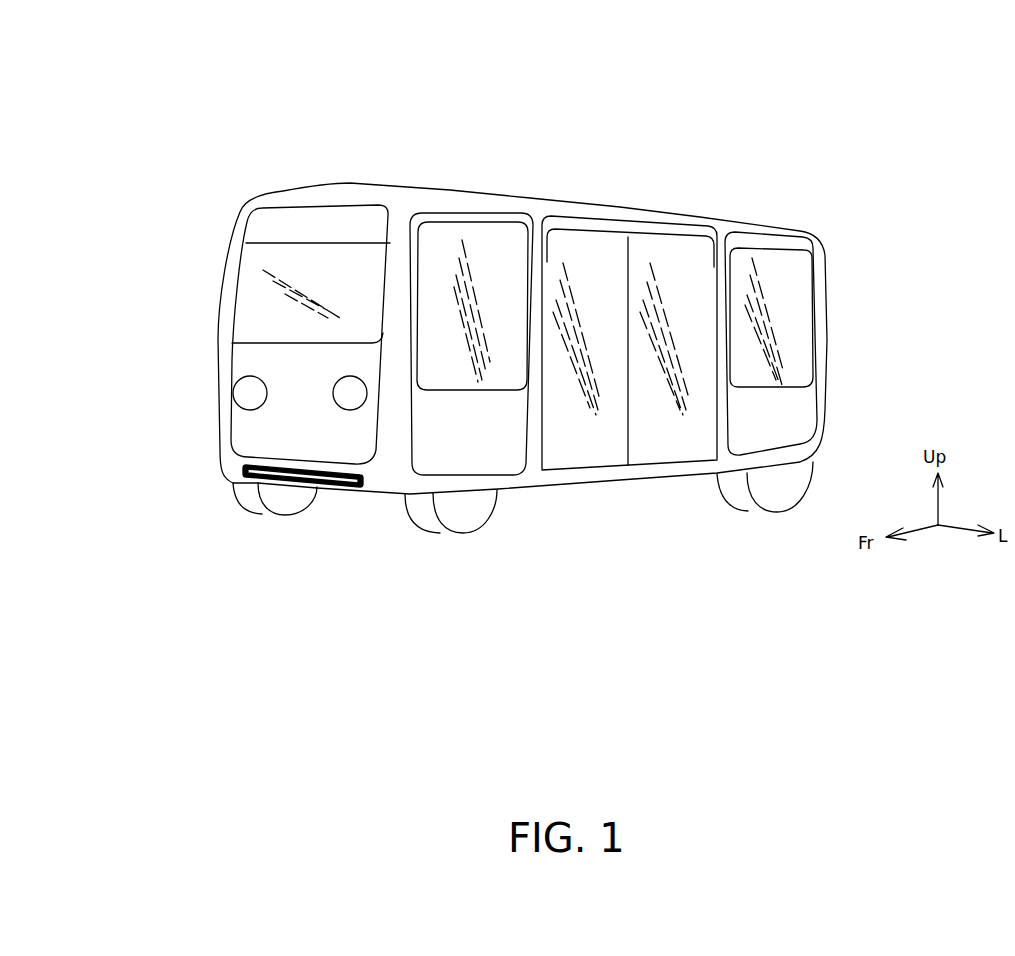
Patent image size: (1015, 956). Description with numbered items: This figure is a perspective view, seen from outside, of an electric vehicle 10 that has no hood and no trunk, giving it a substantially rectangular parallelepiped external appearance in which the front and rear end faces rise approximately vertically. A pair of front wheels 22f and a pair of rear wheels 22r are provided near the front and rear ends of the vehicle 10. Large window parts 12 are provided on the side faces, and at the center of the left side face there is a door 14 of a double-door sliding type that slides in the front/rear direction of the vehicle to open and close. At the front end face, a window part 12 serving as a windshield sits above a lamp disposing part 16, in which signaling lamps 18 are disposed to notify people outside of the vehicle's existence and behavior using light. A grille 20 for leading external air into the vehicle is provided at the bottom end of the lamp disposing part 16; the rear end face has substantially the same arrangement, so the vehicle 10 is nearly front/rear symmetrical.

The vehicle 10 is at (528, 91).
The window part 12 is at (298, 252).
The door 14 is at (636, 247).
The lamp disposing part 16 is at (243, 365).
The signaling lamp 18 is at (233, 393).
The grille 20 is at (290, 478).
The front wheel 22f is at (247, 495).
The rear wheel 22r is at (800, 480).